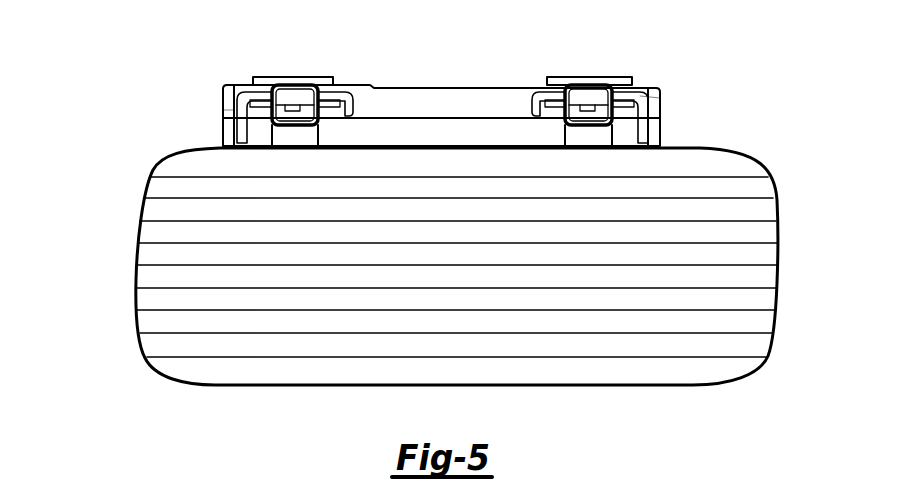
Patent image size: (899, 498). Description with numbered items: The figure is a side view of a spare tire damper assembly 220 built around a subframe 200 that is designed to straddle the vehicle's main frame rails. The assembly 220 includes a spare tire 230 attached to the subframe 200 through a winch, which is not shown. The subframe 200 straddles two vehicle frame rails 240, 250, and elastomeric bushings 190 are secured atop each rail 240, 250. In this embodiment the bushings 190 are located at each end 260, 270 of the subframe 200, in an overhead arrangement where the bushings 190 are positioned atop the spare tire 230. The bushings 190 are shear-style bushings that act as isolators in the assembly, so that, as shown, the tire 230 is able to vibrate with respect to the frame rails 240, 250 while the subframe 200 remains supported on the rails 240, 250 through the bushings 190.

The elastomeric bushings 190 is at (320, 82).
The subframe 200 is at (660, 98).
The damper assembly 220 is at (70, 58).
The spare tire 230 is at (743, 298).
The vehicle frame rail 240 is at (578, 77).
The vehicle frame rail 250 is at (292, 77).
The end of the subframe 260 is at (665, 113).
The end of the subframe 270 is at (217, 113).